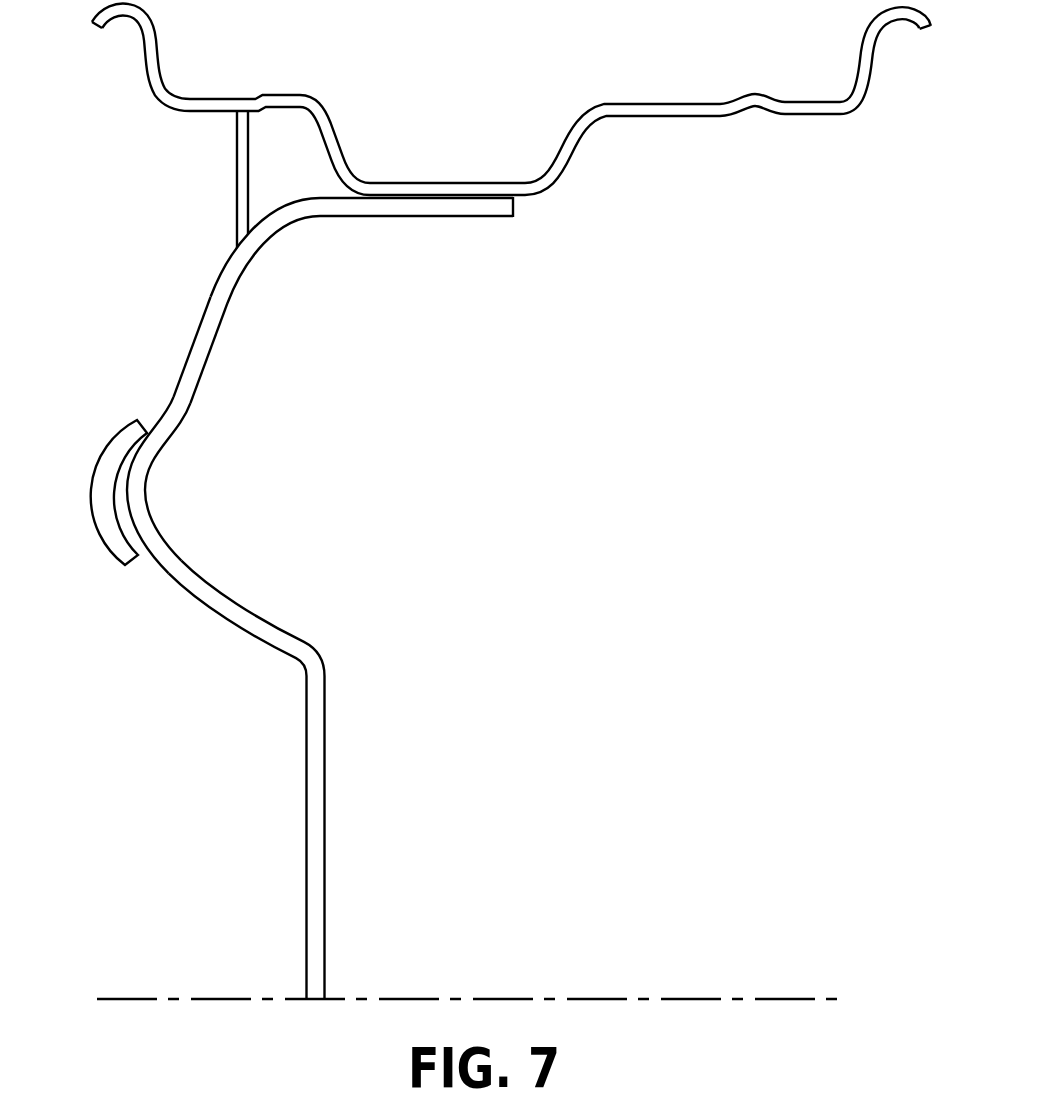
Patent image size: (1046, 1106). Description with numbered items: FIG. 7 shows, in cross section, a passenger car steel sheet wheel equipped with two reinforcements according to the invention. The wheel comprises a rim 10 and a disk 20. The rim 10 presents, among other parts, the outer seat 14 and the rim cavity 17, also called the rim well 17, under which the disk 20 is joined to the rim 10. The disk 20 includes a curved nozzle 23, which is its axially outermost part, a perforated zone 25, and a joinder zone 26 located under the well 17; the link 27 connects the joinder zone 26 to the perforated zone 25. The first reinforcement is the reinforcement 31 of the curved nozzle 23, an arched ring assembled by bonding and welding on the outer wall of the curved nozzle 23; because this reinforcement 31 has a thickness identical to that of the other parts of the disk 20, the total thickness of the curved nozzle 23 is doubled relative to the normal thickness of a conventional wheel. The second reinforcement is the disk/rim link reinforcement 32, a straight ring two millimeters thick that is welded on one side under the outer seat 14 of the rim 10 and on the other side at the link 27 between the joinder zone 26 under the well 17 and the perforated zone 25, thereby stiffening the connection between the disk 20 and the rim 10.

The rim 10 is at (511, 137).
The outer seat 14 is at (213, 98).
The rim cavity 17 is at (453, 183).
The disk 20 is at (352, 598).
The curved nozzle 23 is at (128, 502).
The perforated zone 25 is at (203, 330).
The joinder zone 26 is at (427, 212).
The link 27 is at (257, 230).
The reinforcement of curved nozzle 31 is at (105, 525).
The disk/rim link reinforcement 32 is at (237, 178).